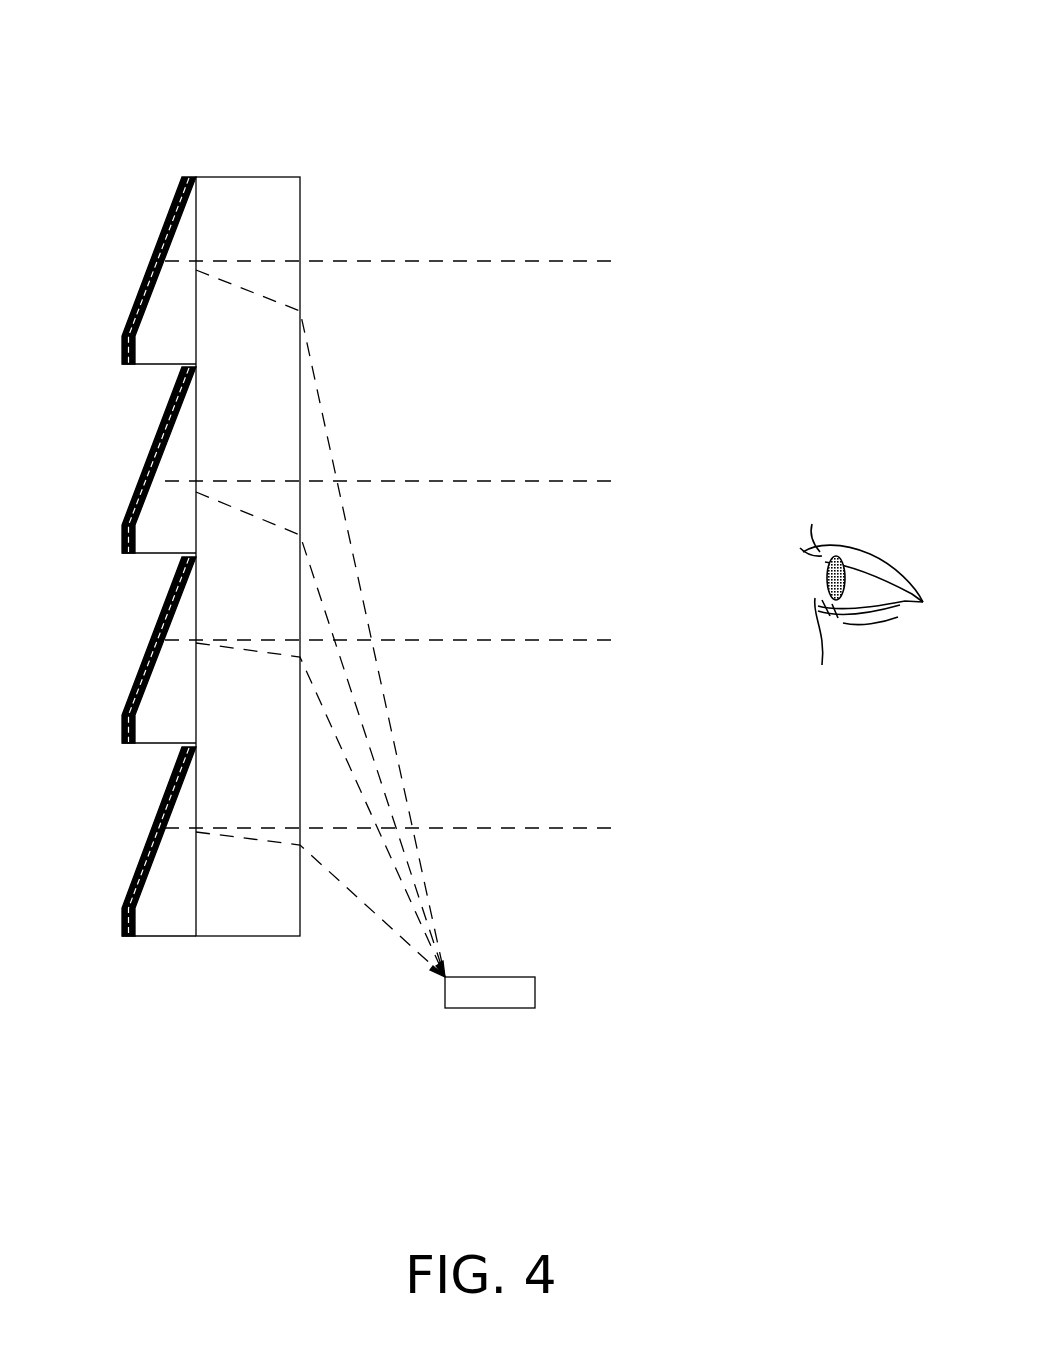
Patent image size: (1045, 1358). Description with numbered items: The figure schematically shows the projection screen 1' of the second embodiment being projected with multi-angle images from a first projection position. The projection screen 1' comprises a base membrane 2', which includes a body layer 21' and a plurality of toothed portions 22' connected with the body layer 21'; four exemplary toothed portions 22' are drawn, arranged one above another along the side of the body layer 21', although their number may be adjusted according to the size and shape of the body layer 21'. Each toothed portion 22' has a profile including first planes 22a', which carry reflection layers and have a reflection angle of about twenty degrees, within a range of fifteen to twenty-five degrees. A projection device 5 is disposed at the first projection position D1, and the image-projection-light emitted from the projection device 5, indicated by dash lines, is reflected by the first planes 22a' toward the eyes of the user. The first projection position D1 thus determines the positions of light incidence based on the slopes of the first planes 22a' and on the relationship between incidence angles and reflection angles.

The projection screen 1' is at (177, 528).
The base membrane 2' is at (177, 615).
The body layer 21' is at (252, 592).
The toothed portions 22' is at (127, 592).
The first planes 22a' is at (121, 556).
The projection device 5 is at (530, 990).
The first projection position D1 is at (490, 955).